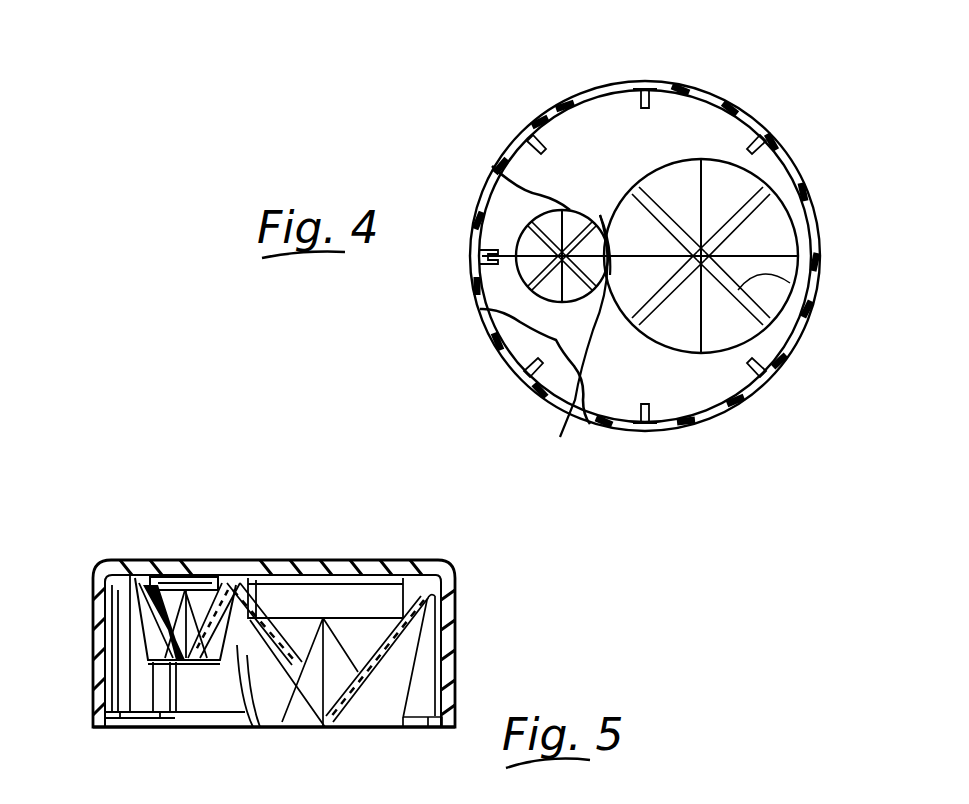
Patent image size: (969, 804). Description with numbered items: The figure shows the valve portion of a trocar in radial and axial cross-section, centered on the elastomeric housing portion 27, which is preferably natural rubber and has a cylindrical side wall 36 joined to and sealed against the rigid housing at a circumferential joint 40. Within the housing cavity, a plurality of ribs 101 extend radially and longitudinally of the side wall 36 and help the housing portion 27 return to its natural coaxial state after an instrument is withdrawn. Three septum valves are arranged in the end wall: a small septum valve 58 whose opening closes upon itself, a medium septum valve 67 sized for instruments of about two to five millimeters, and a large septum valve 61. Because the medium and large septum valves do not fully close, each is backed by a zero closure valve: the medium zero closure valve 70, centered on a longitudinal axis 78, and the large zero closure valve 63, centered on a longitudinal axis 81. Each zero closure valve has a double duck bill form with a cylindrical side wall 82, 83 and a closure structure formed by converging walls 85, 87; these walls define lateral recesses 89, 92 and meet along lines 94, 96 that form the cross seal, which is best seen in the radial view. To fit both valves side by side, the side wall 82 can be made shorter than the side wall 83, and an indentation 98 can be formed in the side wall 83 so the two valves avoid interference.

In FIG. 5, the elastomeric housing portion 27 is at (124, 556).
In FIG. 5, the cylindrical side wall 36 is at (95, 620).
In FIG. 5, the circumferential joint 40 is at (88, 722).
In FIG. 5, the septum valve 58 is at (195, 560).
In FIG. 5, the large septum valve 61 is at (308, 560).
In FIG. 4, the large zero closure valve 63 is at (732, 281).
In FIG. 5, the large zero closure valve 63 is at (384, 676).
In FIG. 5, the medium septum valve 67 is at (213, 560).
In FIG. 4, the medium zero closure valve 70 is at (510, 322).
In FIG. 5, the medium zero closure valve 70 is at (187, 637).
In FIG. 4, the longitudinal axis 78 is at (562, 435).
In FIG. 4, the longitudinal axis 81 is at (702, 262).
In FIG. 4, the cylindrical side wall 82 is at (549, 289).
In FIG. 4, the cylindrical side wall 83 is at (788, 204).
In FIG. 4, the walls 85 is at (491, 224).
In FIG. 4, the walls 87 is at (748, 180).
In FIG. 4, the lateral recesses 89 is at (540, 337).
In FIG. 4, the lateral recesses 92 is at (713, 313).
In FIG. 4, the line 94 is at (556, 258).
In FIG. 4, the line 96 is at (740, 215).
In FIG. 4, the indentation 98 is at (600, 213).
In FIG. 5, the indentation 98 is at (275, 705).
In FIG. 4, the ribs 101 is at (552, 113).
In FIG. 5, the ribs 101 is at (152, 700).